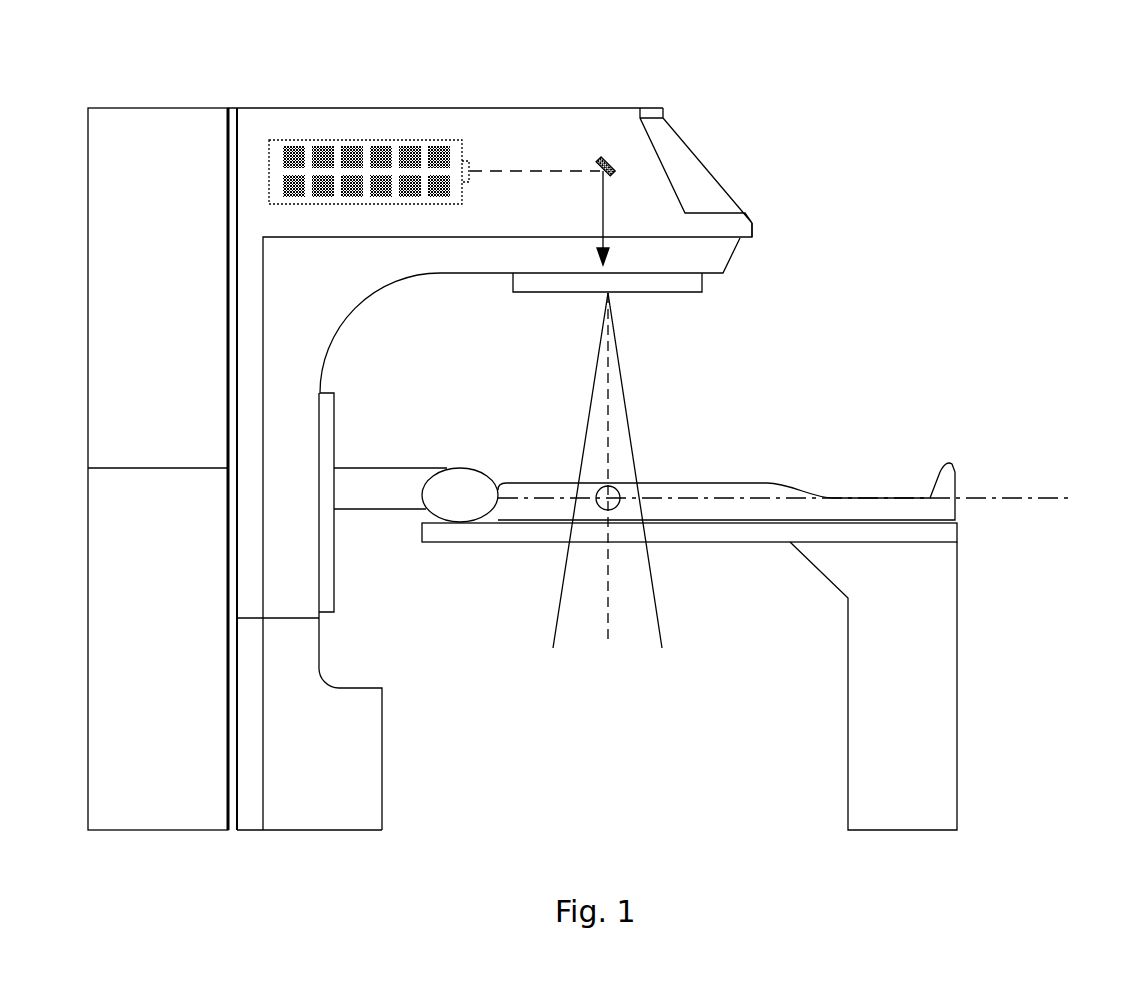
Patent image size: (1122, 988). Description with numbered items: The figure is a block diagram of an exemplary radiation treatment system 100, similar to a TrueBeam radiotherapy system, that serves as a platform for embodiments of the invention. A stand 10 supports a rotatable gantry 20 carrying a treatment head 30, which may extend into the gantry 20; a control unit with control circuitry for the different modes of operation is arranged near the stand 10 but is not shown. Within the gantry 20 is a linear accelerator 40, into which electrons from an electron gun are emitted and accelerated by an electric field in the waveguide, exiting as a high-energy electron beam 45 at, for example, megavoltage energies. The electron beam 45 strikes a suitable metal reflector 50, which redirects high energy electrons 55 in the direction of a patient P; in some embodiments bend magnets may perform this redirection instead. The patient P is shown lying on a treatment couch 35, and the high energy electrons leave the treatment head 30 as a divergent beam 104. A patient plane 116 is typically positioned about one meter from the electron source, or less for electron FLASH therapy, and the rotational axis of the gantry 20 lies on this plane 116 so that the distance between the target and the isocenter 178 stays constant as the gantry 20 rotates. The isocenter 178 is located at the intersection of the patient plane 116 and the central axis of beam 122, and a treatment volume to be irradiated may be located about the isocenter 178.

The radiation treatment system 100 is at (612, 40).
The stand 10 is at (133, 127).
The gantry 20 is at (725, 250).
The treatment head 30 is at (660, 285).
The treatment couch 35 is at (732, 531).
The linear accelerator 40 is at (362, 135).
The electron beam 45 is at (540, 168).
The metal reflector 50 is at (610, 160).
The high energy electrons 55 is at (607, 195).
The divergent beam 104 is at (598, 355).
The patient plane 116 is at (1006, 500).
The central axis of beam 122 is at (610, 645).
The isocenter 178 is at (598, 503).
The patient P is at (835, 497).